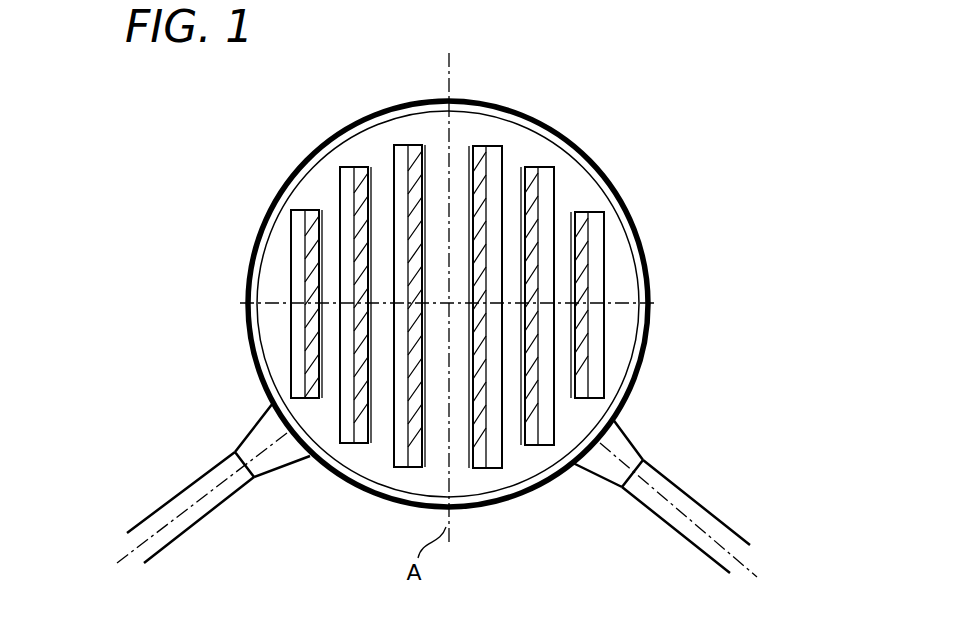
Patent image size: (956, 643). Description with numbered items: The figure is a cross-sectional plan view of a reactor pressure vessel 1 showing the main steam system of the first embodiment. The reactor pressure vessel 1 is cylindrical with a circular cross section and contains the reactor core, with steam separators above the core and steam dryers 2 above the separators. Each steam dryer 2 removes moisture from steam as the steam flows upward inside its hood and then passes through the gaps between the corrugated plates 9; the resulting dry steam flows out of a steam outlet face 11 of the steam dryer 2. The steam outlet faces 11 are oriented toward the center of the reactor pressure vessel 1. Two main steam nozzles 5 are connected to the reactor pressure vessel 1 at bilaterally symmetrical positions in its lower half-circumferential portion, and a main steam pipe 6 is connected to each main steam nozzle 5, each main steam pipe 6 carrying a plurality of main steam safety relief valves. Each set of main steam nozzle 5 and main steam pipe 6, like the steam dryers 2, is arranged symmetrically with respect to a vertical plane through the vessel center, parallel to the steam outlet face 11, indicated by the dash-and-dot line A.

The reactor pressure vessel 1 is at (472, 98).
The steam dryer 2 is at (292, 342).
The main steam nozzle 5 is at (278, 466).
The main steam pipe 6 is at (192, 475).
The corrugated plate 9 is at (312, 210).
The steam outlet face 11 is at (320, 318).